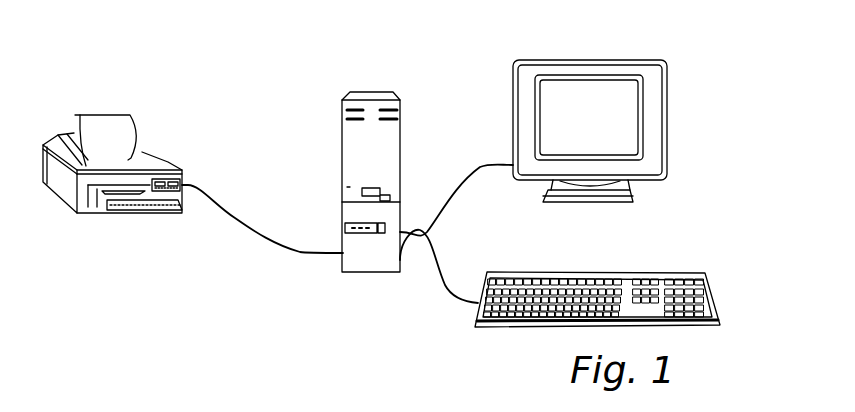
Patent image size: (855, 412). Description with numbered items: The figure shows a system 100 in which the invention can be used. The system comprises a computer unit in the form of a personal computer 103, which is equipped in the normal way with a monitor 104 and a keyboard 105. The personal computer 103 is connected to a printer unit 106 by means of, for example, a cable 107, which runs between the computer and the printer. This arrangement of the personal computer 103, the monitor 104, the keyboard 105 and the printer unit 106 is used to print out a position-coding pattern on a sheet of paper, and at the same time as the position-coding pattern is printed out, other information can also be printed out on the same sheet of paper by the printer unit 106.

The system 100 is at (397, 65).
The personal computer 103 is at (401, 104).
The monitor 104 is at (667, 103).
The keyboard 105 is at (700, 272).
The printer unit 106 is at (100, 215).
The cable 107 is at (255, 232).